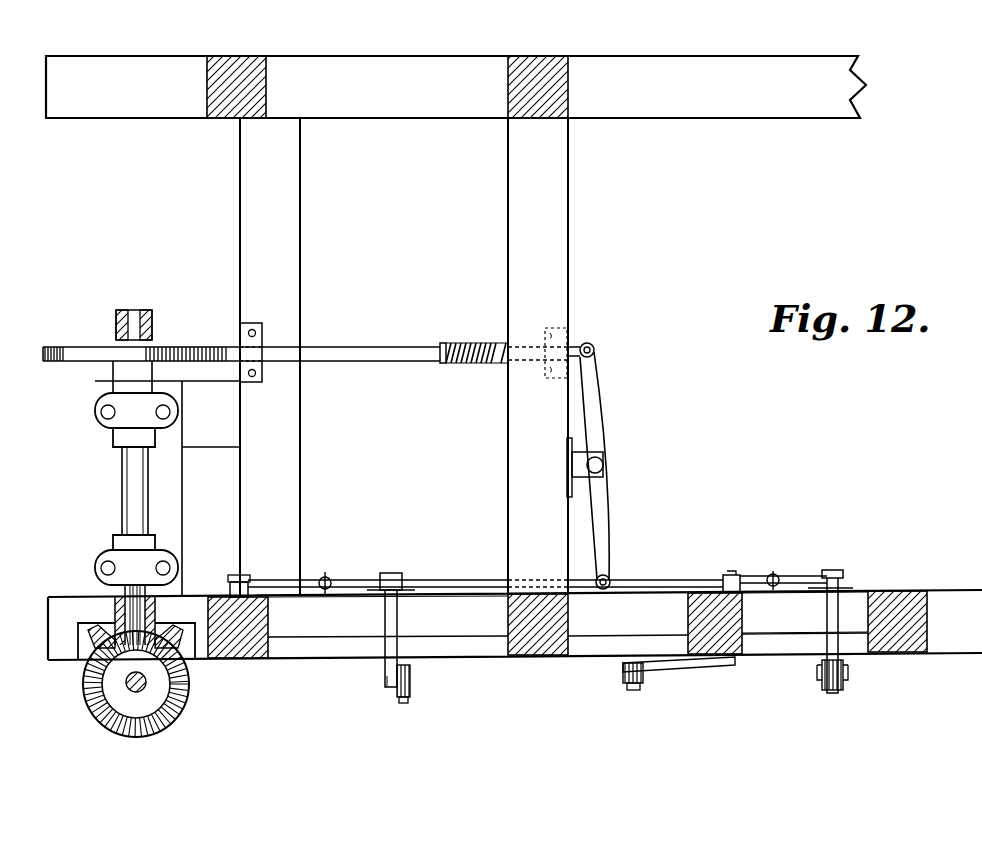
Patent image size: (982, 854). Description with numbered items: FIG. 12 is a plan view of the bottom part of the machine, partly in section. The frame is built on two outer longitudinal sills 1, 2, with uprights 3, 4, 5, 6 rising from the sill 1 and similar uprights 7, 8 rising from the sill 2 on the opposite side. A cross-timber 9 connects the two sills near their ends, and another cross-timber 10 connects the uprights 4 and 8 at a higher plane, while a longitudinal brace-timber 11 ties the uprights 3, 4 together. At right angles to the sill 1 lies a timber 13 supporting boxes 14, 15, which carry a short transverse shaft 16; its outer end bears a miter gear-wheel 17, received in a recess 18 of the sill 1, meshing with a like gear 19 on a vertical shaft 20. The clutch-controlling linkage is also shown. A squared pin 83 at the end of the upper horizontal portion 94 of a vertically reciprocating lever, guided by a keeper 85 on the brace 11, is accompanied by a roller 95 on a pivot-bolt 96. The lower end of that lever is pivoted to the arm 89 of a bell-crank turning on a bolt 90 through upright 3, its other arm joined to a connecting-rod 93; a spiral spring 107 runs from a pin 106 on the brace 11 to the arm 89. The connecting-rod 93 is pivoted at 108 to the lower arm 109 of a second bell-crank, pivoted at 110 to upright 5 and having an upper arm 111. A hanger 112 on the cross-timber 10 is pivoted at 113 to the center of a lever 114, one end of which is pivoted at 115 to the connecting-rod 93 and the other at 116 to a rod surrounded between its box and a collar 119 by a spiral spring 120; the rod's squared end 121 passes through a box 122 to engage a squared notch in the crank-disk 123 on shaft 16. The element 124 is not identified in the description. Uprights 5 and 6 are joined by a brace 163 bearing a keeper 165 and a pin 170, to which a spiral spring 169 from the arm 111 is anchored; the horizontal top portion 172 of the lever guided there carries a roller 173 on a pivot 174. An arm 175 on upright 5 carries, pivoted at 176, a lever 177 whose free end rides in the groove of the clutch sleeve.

The outer longitudinal sill 1 is at (72, 663).
The outer longitudinal sill 2 is at (456, 87).
The upright 3 is at (238, 627).
The upright 4 is at (538, 655).
The upright 5 is at (715, 623).
The upright 6 is at (897, 621).
The upright 7 is at (240, 56).
The upright 8 is at (538, 56).
The cross-timber 9 is at (300, 490).
The cross-timber 10 is at (538, 355).
The longitudinal brace-timber 11 is at (388, 613).
The timber 13 is at (95, 503).
The box 14 is at (95, 557).
The box 15 is at (100, 418).
The short transverse shaft 16 is at (143, 490).
The miter gear-wheel 17 is at (102, 636).
The recess 18 is at (86, 664).
The gear 19 is at (122, 735).
The vertical shaft 20 is at (146, 688).
The squared pin 83 is at (389, 690).
The keeper 85 is at (392, 573).
The bell-crank arm 89 is at (315, 565).
The bolt 90 is at (236, 575).
The connecting-rod 93 is at (452, 580).
The upper horizontal portion 94 is at (397, 620).
The roller 95 is at (404, 703).
The pivot-bolt 96 is at (410, 681).
The pin 106 is at (325, 575).
The spiral spring 107 is at (338, 583).
The pivotal connection 108 is at (735, 562).
The lower arm 109 is at (720, 578).
The pivot 110 is at (745, 598).
The upper arm 111 is at (760, 576).
The hanger 112 is at (580, 465).
The pivotal connection 113 is at (603, 468).
The lever 114 is at (582, 342).
The pivot 115 is at (610, 578).
The pivot 116 is at (594, 350).
The collar 119 is at (440, 345).
The spiral spring 120 is at (480, 333).
The squared end 121 is at (230, 353).
The box 122 is at (254, 345).
The crank-disk 123 is at (100, 347).
The nut 124 is at (130, 318).
The brace 163 is at (778, 628).
The keeper 165 is at (843, 572).
The spiral spring 169 is at (779, 582).
The pin 170 is at (775, 574).
The horizontal top portion 172 is at (838, 615).
The roller 173 is at (830, 695).
The pivot 174 is at (848, 678).
The arm 175 is at (690, 667).
The pivotal connection 176 is at (633, 690).
The lever 177 is at (623, 675).